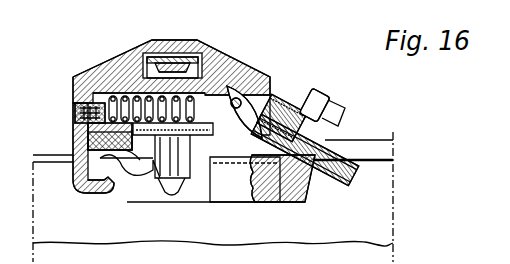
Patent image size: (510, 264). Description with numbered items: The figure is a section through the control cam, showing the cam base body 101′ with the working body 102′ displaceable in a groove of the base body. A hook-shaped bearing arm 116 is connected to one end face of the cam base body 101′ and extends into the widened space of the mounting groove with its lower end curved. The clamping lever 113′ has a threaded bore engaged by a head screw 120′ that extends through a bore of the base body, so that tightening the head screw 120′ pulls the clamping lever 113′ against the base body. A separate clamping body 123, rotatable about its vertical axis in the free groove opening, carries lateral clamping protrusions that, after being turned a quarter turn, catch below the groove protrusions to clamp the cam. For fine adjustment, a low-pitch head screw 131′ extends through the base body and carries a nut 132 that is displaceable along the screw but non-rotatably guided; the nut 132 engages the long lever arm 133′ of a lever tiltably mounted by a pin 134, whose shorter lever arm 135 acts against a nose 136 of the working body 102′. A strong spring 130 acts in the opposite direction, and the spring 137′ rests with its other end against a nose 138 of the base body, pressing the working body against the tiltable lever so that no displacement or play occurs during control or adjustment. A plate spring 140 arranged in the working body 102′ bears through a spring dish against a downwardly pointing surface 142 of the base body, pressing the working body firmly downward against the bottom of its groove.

The cam base body 101′ is at (72, 128).
The working body 102′ is at (240, 78).
The clamping lever 113′ is at (194, 200).
The bearing arm 116 is at (76, 170).
The head screw 120′ is at (338, 118).
The clamping body 123 is at (160, 180).
The spring 130 is at (305, 97).
The head screw 131′ is at (302, 103).
The nut 132 is at (253, 159).
The long lever arm 133′ is at (242, 132).
The pin 134 is at (272, 82).
The shorter lever arm 135 is at (241, 98).
The nose 136 is at (208, 62).
The spring 137′ is at (122, 66).
The nose 138 is at (85, 72).
The spring 140 is at (151, 46).
The downwardly pointing surface 142 is at (170, 46).